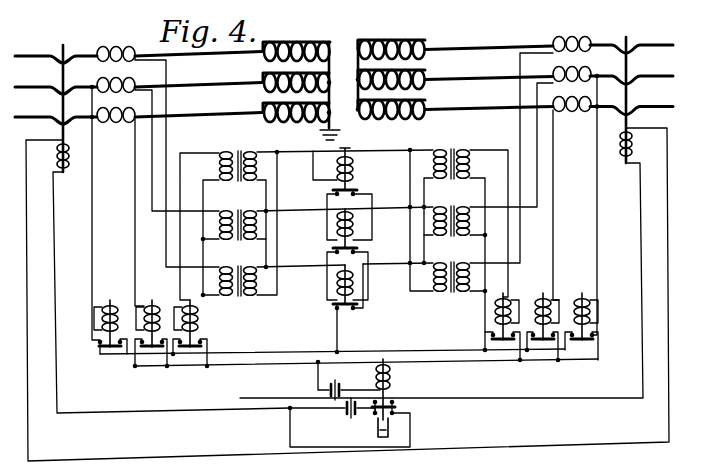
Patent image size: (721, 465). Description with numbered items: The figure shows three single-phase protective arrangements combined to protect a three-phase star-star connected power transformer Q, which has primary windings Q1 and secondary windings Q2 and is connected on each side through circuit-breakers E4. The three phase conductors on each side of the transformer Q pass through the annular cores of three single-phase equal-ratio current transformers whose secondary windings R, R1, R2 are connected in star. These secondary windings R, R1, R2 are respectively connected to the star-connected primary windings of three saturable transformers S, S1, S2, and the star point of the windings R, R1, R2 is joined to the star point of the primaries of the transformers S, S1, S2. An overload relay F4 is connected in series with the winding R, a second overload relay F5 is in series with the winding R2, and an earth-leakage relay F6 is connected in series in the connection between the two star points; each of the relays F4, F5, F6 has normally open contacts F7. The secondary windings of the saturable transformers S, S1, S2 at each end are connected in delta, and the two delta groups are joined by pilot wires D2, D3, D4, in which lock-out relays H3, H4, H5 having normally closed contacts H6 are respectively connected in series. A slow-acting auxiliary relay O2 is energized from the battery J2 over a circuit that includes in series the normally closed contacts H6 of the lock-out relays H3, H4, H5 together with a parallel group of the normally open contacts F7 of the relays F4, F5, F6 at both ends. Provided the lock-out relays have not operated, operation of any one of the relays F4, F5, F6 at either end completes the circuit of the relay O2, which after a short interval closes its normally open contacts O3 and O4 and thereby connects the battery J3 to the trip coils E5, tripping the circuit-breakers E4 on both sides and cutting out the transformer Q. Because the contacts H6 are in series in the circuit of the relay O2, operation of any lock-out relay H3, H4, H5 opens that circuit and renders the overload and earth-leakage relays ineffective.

The current transformer secondary winding R is at (106, 47).
The current transformer secondary winding R1 is at (107, 80).
The current transformer secondary winding R2 is at (108, 121).
The circuit-breaker E4 is at (60, 75).
The trip coil E5 is at (61, 158).
The primary winding Q1 is at (312, 41).
The power transformer Q is at (343, 58).
The secondary winding Q2 is at (386, 42).
The saturable transformer S is at (440, 292).
The saturable transformer S1 is at (344, 211).
The saturable transformer S2 is at (353, 267).
The pilot wire D2 is at (366, 151).
The pilot wire D3 is at (410, 207).
The pilot wire D4 is at (378, 266).
The lock-out relay H3 is at (355, 172).
The lock-out relay H4 is at (355, 228).
The lock-out relay H5 is at (340, 280).
The normally closed contacts H6 is at (333, 190).
The overload relay F4 is at (200, 323).
The overload relay F5 is at (148, 312).
The earth-leakage relay F6 is at (102, 320).
The normally open contacts F7 is at (195, 348).
The battery J2 is at (318, 384).
The battery J3 is at (345, 410).
The slow-acting auxiliary relay O2 is at (390, 373).
The normally open contact O3 is at (395, 402).
The normally open contact O4 is at (396, 413).